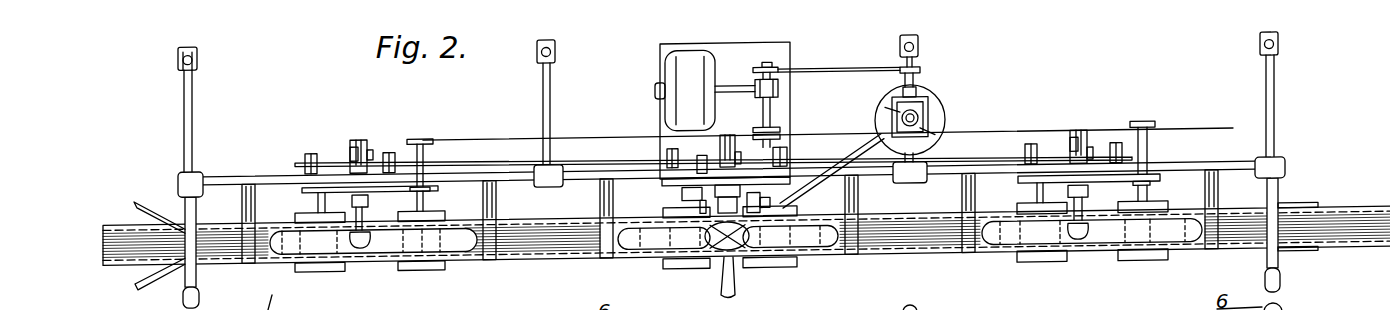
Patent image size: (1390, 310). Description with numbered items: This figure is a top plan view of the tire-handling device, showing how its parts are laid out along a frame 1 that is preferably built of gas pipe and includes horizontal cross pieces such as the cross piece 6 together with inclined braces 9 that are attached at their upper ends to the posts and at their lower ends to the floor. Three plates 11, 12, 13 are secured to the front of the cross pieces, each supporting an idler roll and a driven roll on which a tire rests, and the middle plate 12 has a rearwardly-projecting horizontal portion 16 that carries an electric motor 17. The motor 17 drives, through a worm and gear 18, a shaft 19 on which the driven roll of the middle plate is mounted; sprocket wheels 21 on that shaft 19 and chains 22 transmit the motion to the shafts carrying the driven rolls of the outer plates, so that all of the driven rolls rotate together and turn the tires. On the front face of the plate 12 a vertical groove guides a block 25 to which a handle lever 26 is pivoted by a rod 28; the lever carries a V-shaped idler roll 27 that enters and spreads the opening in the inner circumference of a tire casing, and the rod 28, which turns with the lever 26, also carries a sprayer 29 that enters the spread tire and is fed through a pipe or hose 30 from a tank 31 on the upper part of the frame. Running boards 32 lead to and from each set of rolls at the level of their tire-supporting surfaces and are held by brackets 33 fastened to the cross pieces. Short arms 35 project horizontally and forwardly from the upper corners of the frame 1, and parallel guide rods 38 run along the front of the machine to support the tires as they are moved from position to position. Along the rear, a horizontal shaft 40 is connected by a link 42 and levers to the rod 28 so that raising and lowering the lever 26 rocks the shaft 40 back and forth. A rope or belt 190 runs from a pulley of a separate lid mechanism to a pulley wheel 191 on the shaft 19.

The frame 1 is at (270, 174).
The horizontal cross piece 6 is at (227, 177).
The inclined brace 9 is at (183, 109).
The plate 11 is at (302, 190).
The plate 12 is at (662, 184).
The plate 13 is at (1022, 182).
The rearwardly-projecting horizontal portion 16 is at (749, 45).
The electric motor 17 is at (687, 51).
The worm and gear 18 is at (779, 87).
The shaft 19 is at (779, 98).
The sprocket wheel 21 is at (758, 133).
The chain 22 is at (573, 138).
The block 25 is at (690, 192).
The handle lever 26 is at (722, 289).
The V-shaped idler roll 27 is at (690, 268).
The rod 28 is at (772, 197).
The sprayer 29 is at (778, 268).
The pipe or hose 30 is at (857, 149).
The tank 31 is at (944, 111).
The running board 32 is at (121, 265).
The bracket 33 is at (242, 205).
The arm 35 is at (182, 281).
The guide rod 38 is at (160, 211).
The horizontal shaft 40 is at (335, 164).
The link 42 is at (702, 204).
The rope or belt 190 is at (834, 70).
The pulley wheel 191 is at (771, 67).